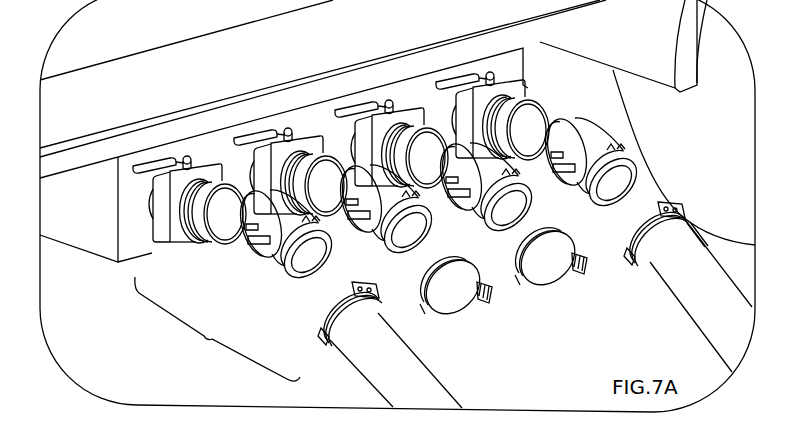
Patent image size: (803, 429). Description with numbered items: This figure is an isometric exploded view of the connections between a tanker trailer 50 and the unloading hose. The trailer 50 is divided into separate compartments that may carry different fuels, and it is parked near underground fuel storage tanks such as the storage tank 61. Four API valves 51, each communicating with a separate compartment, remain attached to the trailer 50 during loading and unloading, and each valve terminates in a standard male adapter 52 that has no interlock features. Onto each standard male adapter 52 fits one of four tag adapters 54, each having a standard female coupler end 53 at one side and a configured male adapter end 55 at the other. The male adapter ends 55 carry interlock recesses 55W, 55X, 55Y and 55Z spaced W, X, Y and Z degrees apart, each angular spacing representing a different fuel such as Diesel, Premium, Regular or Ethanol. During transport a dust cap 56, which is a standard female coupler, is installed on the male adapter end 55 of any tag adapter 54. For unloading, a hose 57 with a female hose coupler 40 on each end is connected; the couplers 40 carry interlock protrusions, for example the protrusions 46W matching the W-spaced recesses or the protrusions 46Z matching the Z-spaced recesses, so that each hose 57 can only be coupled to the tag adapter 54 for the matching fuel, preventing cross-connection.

The female hose coupler 40 is at (320, 303).
The interlock protrusions 46W is at (368, 314).
The interlock protrusions 46Z is at (670, 200).
The tanker trailer 50 is at (88, 262).
The API valve 51 is at (152, 157).
The standard male adapter 52 is at (191, 258).
The standard female coupler end 53 is at (236, 268).
The tag adapter 54 is at (257, 270).
The male adapter end 55 is at (277, 282).
The interlock recesses 55W is at (322, 255).
The interlock recesses 55X is at (423, 222).
The interlock recesses 55Y is at (530, 197).
The interlock recesses 55Z is at (638, 155).
The dust cap 56 is at (458, 296).
The hose 57 is at (422, 387).
The underground fuel storage tank 61 is at (233, 265).